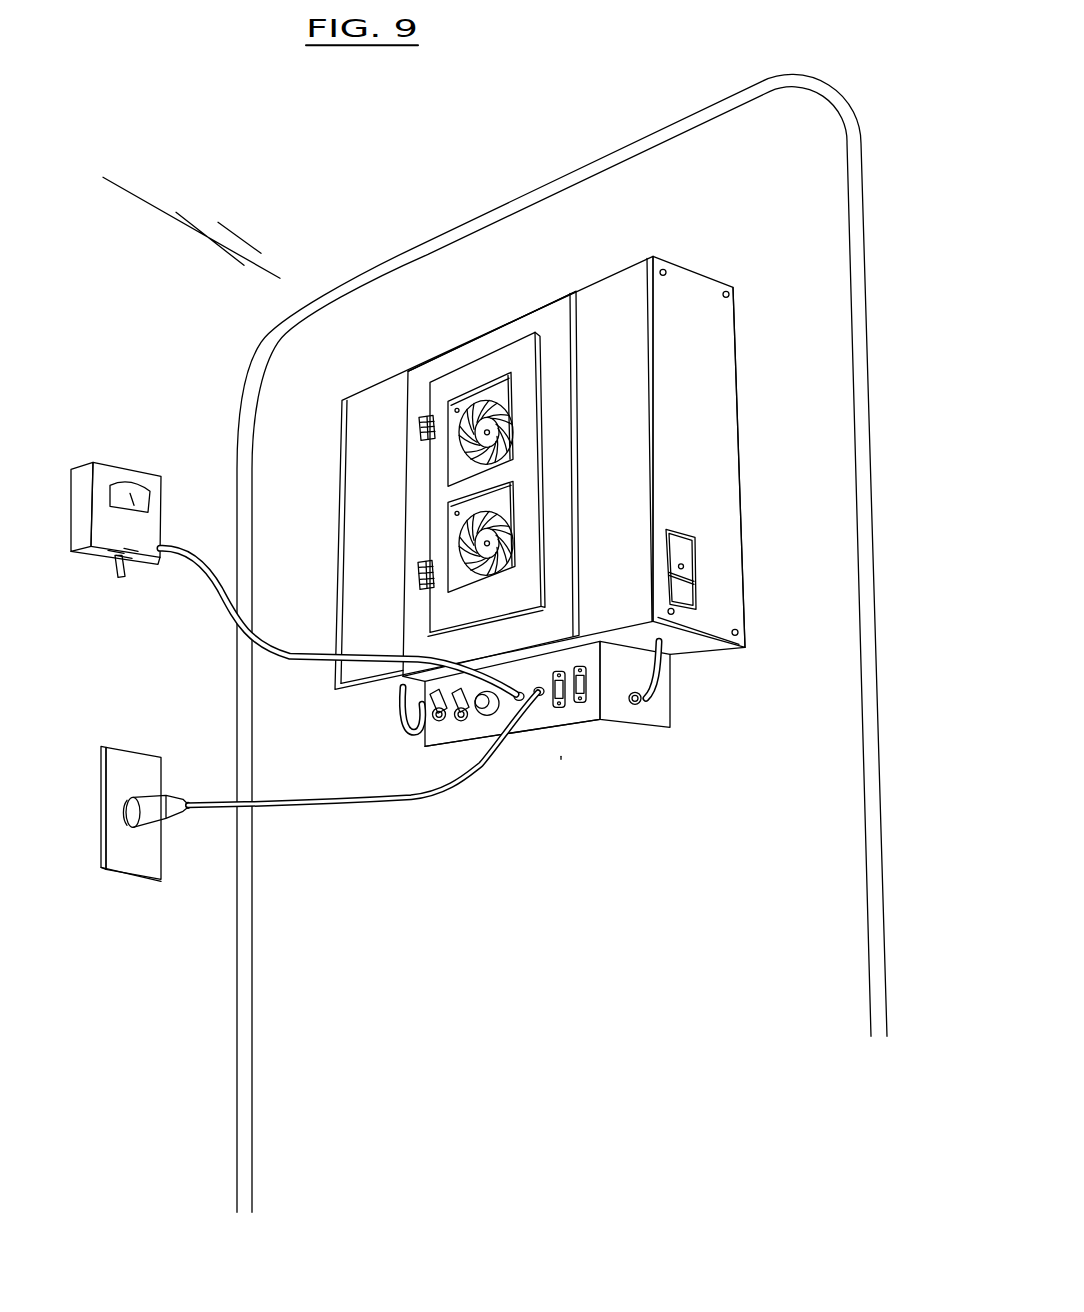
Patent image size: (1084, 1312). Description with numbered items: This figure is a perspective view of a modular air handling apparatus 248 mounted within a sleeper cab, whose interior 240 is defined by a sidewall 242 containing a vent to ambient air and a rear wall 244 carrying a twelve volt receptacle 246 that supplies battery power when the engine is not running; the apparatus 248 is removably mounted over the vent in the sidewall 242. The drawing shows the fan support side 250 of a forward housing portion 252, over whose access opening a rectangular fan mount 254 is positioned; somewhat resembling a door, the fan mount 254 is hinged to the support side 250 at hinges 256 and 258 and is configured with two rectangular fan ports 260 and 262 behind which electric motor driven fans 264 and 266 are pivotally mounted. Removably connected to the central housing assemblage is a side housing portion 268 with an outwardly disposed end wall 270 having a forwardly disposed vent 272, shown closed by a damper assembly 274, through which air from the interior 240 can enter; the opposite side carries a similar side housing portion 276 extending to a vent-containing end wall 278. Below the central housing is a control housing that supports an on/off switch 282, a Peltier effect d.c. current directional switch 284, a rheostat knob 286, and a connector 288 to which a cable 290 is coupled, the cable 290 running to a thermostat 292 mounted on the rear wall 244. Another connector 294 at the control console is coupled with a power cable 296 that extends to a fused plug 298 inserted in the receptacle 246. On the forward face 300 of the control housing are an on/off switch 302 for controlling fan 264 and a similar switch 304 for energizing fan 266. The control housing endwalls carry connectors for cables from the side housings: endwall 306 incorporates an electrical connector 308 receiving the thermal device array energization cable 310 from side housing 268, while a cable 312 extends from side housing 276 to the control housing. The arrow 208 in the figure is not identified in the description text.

The airflow direction 208 is at (563, 765).
The interior of sleeping compartment 240 is at (333, 388).
The sidewall 242 is at (803, 222).
The rear wall 244 is at (179, 343).
The 12 volt receptacle 246 is at (130, 760).
The air handling apparatus 248 is at (692, 192).
The fan support side 250 is at (592, 466).
The forward housing portion 252 is at (347, 680).
The rectangular fan mount 254 is at (513, 363).
The hinge 256 is at (419, 428).
The hinge 258 is at (418, 577).
The rectangular fan port 260 is at (490, 385).
The rectangular fan port 262 is at (512, 562).
The electric motor driven fan 264 is at (513, 405).
The electric motor driven fan 266 is at (512, 522).
The side housing portion 268 is at (751, 400).
The end wall 270 is at (727, 450).
The vent 272 is at (700, 600).
The damper assembly 274 is at (690, 563).
The side housing portion 276 is at (464, 475).
The end wall 278 is at (347, 435).
The on/off switch 282 is at (438, 731).
The Peltier effect d.c. current directional switch 284 is at (463, 727).
The rheostat knob 286 is at (490, 717).
The connector 288 is at (543, 702).
The cable 290 is at (227, 605).
The thermostat 292 is at (107, 473).
The connector 294 is at (560, 770).
The power cable 296 is at (327, 810).
The fused plug 298 is at (170, 797).
The forward face 300 is at (537, 747).
The on/off switch 302 is at (562, 709).
The switch 304 is at (583, 705).
The endwall 306 is at (658, 713).
The electrical connector 308 is at (646, 701).
The thermal device array energization cable 310 is at (661, 677).
The cable 312 is at (402, 710).